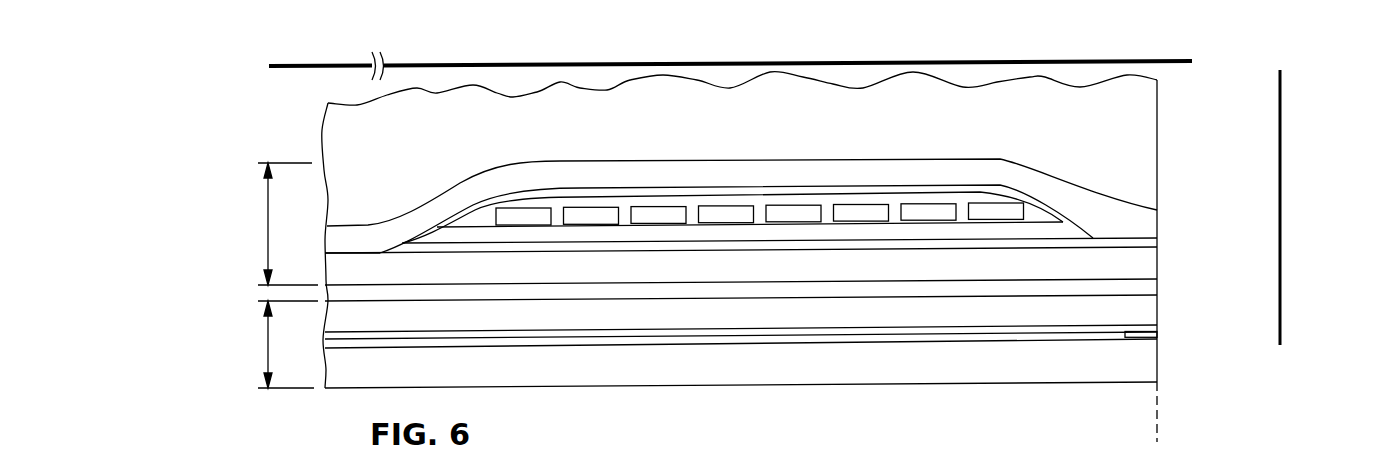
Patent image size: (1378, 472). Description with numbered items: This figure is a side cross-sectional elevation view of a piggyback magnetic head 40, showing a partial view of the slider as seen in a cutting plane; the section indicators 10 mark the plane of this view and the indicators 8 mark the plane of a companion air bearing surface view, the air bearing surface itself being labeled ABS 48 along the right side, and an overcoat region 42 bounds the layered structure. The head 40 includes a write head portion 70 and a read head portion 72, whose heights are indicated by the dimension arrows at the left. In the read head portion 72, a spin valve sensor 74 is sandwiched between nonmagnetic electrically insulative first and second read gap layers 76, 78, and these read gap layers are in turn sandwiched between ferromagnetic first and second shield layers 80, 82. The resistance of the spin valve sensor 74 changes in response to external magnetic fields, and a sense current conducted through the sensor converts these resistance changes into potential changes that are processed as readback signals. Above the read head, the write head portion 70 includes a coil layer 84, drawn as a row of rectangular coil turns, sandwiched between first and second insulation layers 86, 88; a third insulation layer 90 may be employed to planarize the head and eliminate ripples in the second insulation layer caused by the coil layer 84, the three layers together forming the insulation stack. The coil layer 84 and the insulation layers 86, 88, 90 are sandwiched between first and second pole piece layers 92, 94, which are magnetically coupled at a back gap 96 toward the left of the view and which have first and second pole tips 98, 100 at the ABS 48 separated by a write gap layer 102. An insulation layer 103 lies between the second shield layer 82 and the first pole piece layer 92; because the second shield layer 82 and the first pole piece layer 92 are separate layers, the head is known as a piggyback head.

The section line 8- 8 is at (1293, 339).
The section line 10-10 / slider surface 10 is at (1183, 53).
The piggyback magnetic head 40 is at (302, 113).
The overcoat layer 42 is at (1140, 110).
The air bearing surface (ABS) 48 is at (1160, 437).
The write head portion 70 is at (267, 232).
The read head portion 72 is at (267, 349).
The spin valve sensor 74 is at (1157, 333).
The first read gap layer 76 is at (807, 345).
The second read gap layer 78 is at (777, 330).
The first shield layer 80 is at (917, 368).
The second shield layer 82 is at (1025, 313).
The coil layer 84 is at (777, 205).
The first insulation layer 86 is at (698, 237).
The second insulation layer 88 is at (1040, 213).
The third insulation layer 90 is at (563, 192).
The first pole piece layer 92 is at (1080, 280).
The second pole piece layer 94 is at (926, 160).
The back gap 96 is at (367, 253).
The first pole tip 98 is at (1157, 266).
The second pole tip 100 is at (1150, 221).
The write gap layer 102 is at (1157, 240).
The insulation layer 103 is at (977, 290).